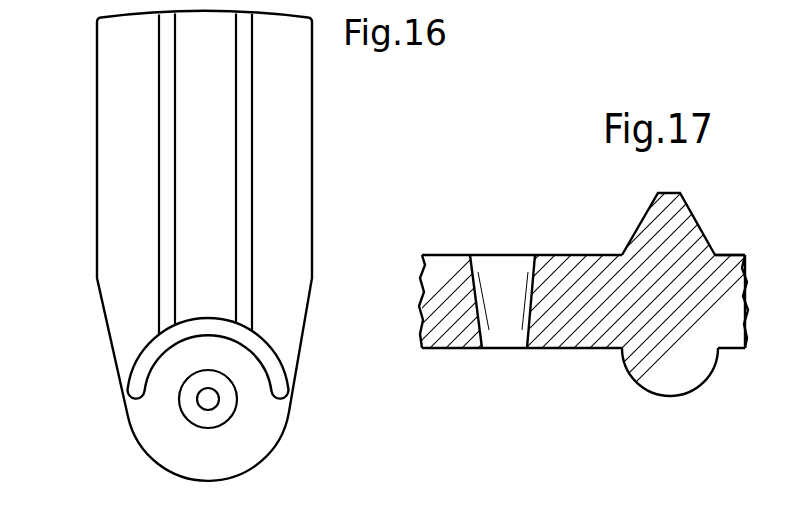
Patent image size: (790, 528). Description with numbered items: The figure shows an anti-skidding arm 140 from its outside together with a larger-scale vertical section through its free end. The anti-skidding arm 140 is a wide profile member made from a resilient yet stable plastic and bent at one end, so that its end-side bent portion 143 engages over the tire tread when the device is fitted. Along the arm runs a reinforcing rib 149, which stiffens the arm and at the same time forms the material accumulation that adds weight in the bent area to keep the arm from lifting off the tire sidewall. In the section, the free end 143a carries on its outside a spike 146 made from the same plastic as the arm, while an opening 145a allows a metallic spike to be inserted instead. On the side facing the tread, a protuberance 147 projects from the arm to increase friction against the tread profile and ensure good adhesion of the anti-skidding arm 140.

In FIG. 16, the anti-skidding arm 140 is at (96, 182).
In FIG. 17, the anti-skidding arm 140 is at (430, 355).
In FIG. 16, the reinforcing rib 149 is at (248, 160).
In FIG. 17, the end-side bent portion 143 is at (455, 252).
In FIG. 17, the opening 145a is at (526, 252).
In FIG. 17, the spike 146 is at (650, 220).
In FIG. 17, the free end 143a is at (728, 262).
In FIG. 17, the protuberance 147 is at (643, 380).